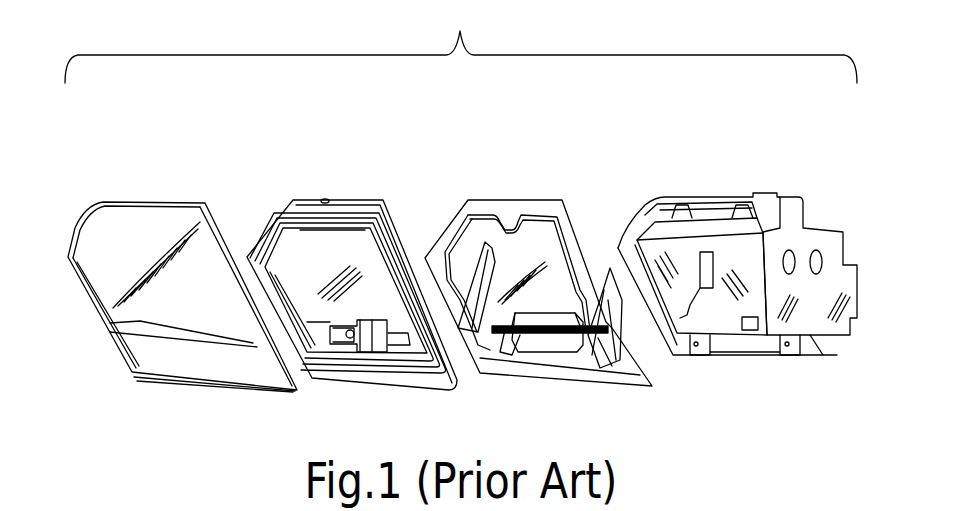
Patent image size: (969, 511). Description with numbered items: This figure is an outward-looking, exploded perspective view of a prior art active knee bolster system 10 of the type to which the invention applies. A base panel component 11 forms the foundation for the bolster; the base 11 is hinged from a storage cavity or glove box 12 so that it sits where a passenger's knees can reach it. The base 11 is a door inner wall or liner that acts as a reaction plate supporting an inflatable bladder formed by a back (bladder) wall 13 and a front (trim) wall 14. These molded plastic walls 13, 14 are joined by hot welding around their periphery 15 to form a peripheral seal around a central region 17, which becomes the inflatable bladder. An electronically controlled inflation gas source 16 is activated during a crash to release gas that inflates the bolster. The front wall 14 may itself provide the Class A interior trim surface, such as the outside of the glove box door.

The active knee bolster system 10 is at (461, 43).
The base panel component 11 is at (492, 197).
The glove box 12 is at (690, 197).
The back (bladder) wall 13 is at (300, 197).
The front (trim) wall 14 is at (160, 195).
The periphery 15 is at (360, 203).
The inflation gas source 16 is at (370, 338).
The central region 17 is at (353, 257).